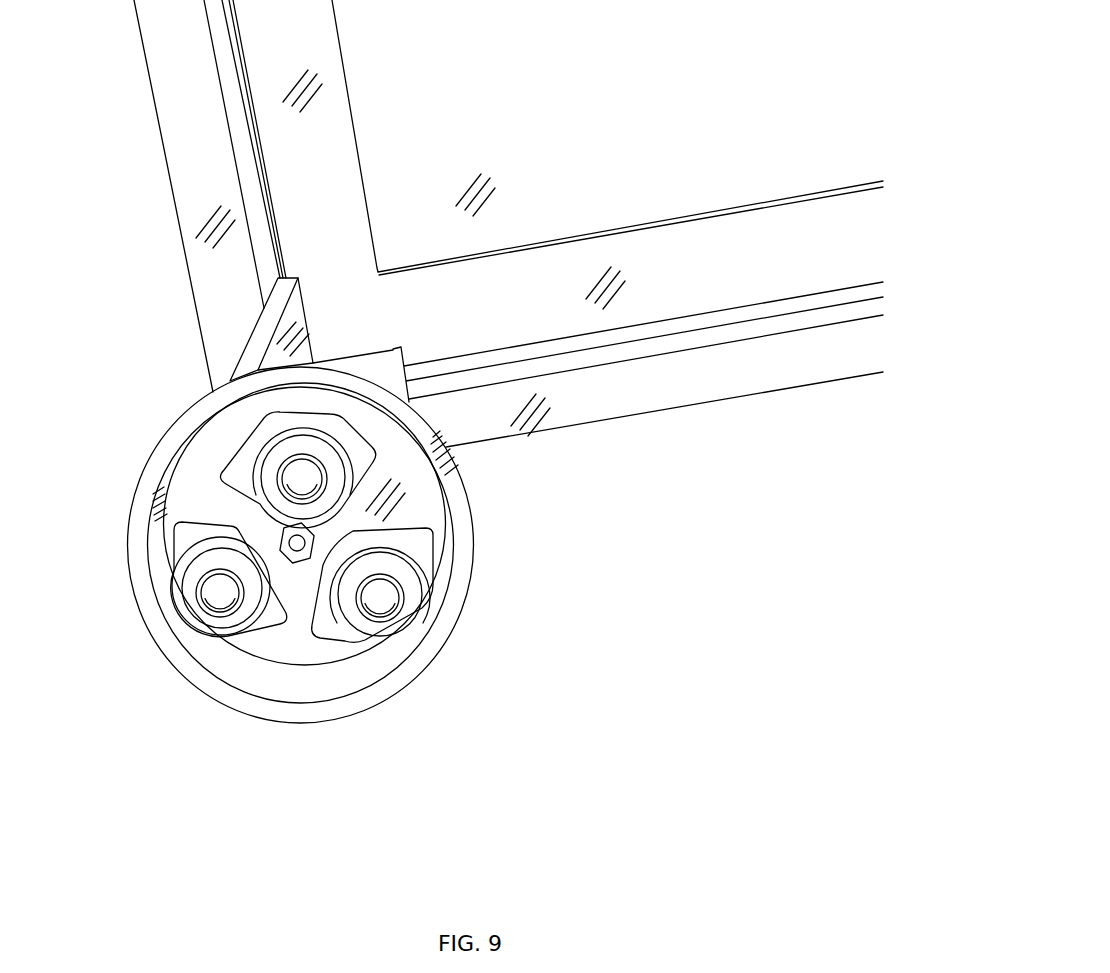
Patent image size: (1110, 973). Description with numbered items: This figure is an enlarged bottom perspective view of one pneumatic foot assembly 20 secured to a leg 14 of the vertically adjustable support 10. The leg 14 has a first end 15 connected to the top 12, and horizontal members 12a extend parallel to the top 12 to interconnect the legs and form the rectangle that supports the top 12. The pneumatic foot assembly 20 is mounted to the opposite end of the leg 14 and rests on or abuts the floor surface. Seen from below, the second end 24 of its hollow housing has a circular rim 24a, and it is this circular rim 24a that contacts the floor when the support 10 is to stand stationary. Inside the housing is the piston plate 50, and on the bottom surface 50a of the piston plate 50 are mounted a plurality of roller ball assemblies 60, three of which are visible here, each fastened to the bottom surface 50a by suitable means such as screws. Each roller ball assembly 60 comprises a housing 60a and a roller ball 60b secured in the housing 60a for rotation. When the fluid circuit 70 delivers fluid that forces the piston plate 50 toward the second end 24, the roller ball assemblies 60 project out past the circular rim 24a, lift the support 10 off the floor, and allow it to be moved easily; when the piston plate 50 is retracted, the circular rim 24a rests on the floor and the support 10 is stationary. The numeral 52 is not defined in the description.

The vertically adjustable support 10 is at (508, 260).
The top 12 is at (508, 260).
The horizontal members 12a is at (737, 452).
The leg 14 is at (240, 357).
The first end 15 is at (298, 278).
The pneumatic foot assembly 20 is at (346, 545).
The second end 24 is at (354, 545).
The circular rim 24a is at (473, 565).
The piston plate 50 is at (362, 538).
The bottom surface 50a is at (281, 647).
The roller assembly 52 is at (286, 532).
The roller ball assembly 60 is at (291, 532).
The housing 60a is at (327, 437).
The roller ball 60b is at (298, 472).
The fluid circuit 70 is at (158, 648).